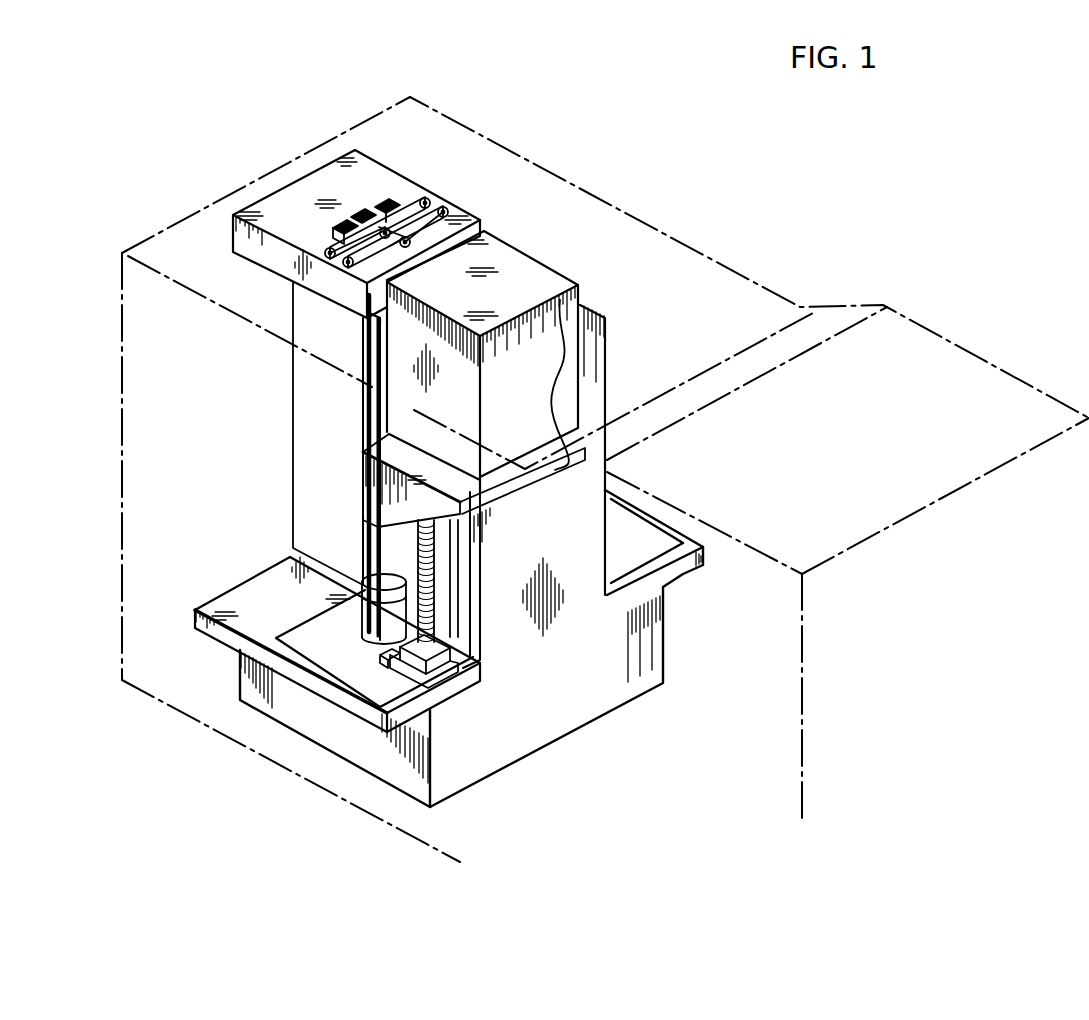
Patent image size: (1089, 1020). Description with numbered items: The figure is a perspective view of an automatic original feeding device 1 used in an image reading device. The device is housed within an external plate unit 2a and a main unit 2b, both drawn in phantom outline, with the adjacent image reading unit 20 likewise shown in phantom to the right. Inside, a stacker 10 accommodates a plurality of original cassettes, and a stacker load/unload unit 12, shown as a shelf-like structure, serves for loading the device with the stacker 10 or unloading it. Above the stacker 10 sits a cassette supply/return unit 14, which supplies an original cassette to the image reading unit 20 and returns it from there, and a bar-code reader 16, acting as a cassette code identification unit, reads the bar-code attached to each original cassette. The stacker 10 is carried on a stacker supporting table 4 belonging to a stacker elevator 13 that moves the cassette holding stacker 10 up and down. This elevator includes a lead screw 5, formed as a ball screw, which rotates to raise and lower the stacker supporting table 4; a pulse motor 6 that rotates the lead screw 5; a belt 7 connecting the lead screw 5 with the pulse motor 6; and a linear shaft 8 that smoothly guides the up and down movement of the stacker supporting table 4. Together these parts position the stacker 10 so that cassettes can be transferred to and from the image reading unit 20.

The automatic original feeding device 1 is at (556, 166).
The external plate unit 2a is at (122, 286).
The main unit 2b is at (303, 317).
The stacker supporting table 4 is at (372, 488).
The lead screw 5 is at (418, 583).
The pulse motor 6 is at (365, 618).
The belt 7 is at (282, 698).
The linear shaft 8 is at (372, 550).
The stacker 10 is at (548, 262).
The stacker load/unload unit 12 is at (632, 556).
The stacker elevator 13 is at (352, 460).
The cassette supply/return unit 14 is at (356, 202).
The bar-code reader 16 is at (342, 276).
The image reading unit 20 is at (962, 343).